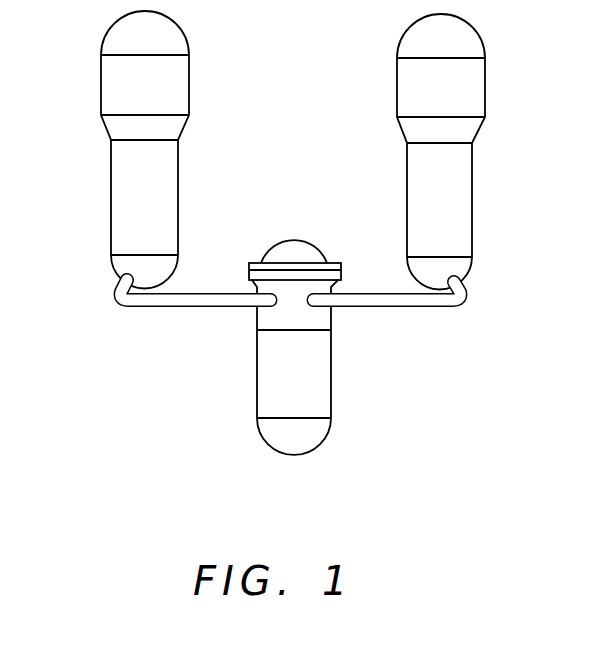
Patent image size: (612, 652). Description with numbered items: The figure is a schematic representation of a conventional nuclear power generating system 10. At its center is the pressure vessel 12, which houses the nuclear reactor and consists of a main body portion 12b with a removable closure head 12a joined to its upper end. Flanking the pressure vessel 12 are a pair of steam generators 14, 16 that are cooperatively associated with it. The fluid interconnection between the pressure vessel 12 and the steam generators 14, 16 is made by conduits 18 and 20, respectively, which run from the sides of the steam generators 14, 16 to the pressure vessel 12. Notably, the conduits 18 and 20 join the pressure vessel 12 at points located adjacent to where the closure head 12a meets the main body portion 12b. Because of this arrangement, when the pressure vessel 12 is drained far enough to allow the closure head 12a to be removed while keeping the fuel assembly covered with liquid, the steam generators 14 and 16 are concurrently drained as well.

The nuclear power generating system 10 is at (296, 233).
The pressure vessel 12 is at (326, 330).
The closure head 12a is at (296, 240).
The main body portion 12b is at (332, 441).
The steam generator 14 is at (105, 185).
The steam generator 16 is at (482, 195).
The conduit 18 is at (203, 308).
The conduit 20 is at (382, 308).